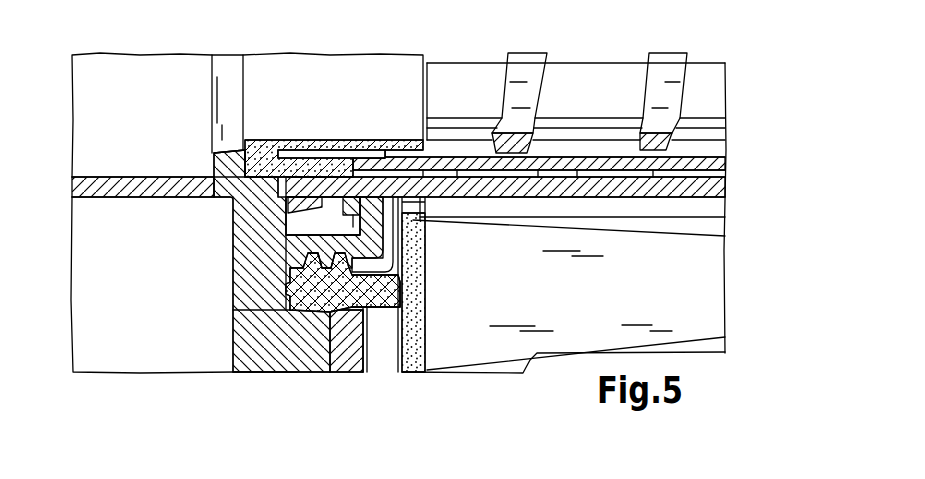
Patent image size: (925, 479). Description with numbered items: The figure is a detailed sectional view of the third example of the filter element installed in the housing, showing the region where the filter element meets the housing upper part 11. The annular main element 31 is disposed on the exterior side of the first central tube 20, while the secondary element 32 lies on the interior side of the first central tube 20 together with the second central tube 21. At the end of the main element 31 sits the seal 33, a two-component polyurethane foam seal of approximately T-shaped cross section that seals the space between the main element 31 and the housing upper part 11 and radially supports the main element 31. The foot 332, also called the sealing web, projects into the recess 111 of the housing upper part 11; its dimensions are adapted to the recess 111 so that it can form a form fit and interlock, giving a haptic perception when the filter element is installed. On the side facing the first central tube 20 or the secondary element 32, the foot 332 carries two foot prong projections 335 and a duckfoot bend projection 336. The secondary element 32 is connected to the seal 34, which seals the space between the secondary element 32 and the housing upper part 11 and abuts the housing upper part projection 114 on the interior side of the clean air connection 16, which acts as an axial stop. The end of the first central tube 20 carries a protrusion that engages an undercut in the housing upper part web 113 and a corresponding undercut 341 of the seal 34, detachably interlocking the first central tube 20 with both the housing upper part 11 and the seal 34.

The housing upper part 11 is at (292, 350).
The recess 111 is at (300, 338).
The housing upper part web 113 is at (300, 206).
The housing upper part projection 114 is at (230, 150).
The clean air connection 16 is at (93, 186).
The first central tube 20 is at (708, 187).
The second central tube 21 is at (672, 97).
The main element 31 is at (428, 343).
The secondary element 32 is at (720, 157).
The seal 33 is at (380, 359).
The foot 332 is at (300, 300).
The foot prong projections 335 is at (300, 264).
The duckfoot bend projection 336 is at (330, 350).
The seal 34 is at (263, 150).
The undercut 341 is at (330, 172).